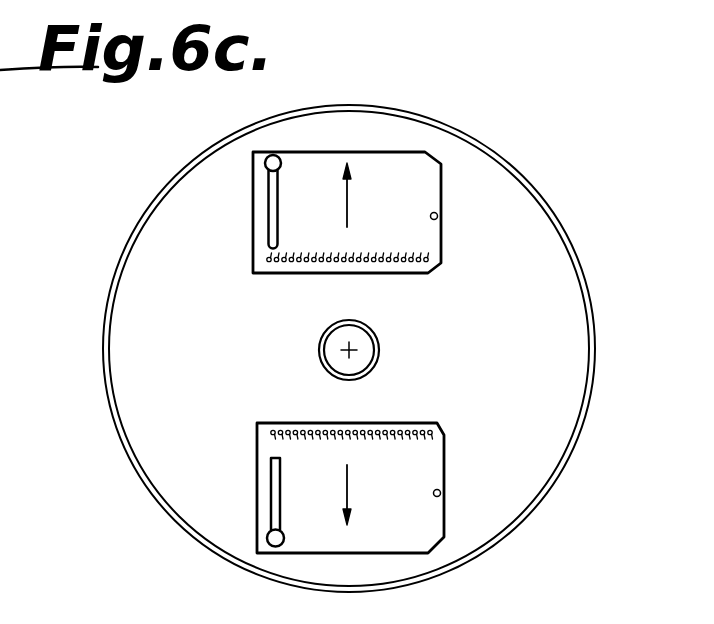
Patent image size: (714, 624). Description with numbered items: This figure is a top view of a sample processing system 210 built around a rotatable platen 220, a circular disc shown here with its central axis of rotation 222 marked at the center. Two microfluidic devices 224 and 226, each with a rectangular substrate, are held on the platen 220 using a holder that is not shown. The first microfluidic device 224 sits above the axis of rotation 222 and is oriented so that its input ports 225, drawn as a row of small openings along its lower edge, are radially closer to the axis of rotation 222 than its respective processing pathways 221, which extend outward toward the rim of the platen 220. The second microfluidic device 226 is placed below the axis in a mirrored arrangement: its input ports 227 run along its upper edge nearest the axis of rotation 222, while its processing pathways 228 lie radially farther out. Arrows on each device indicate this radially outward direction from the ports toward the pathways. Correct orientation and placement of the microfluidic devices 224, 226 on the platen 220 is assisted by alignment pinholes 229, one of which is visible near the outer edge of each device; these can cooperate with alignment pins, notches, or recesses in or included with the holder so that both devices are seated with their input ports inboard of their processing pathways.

The tape winding mechanism 210 is at (471, 7).
The rotatable platen 220 is at (552, 313).
The processing pathways 221 is at (276, 210).
The central axis of rotation 222 is at (352, 352).
The microfluidic device 224 is at (415, 182).
The input ports 225 is at (428, 258).
The microfluidic device 226 is at (413, 520).
The input ports 227 is at (432, 437).
The processing pathways 228 is at (275, 507).
The alignment pinholes 229 is at (437, 215).